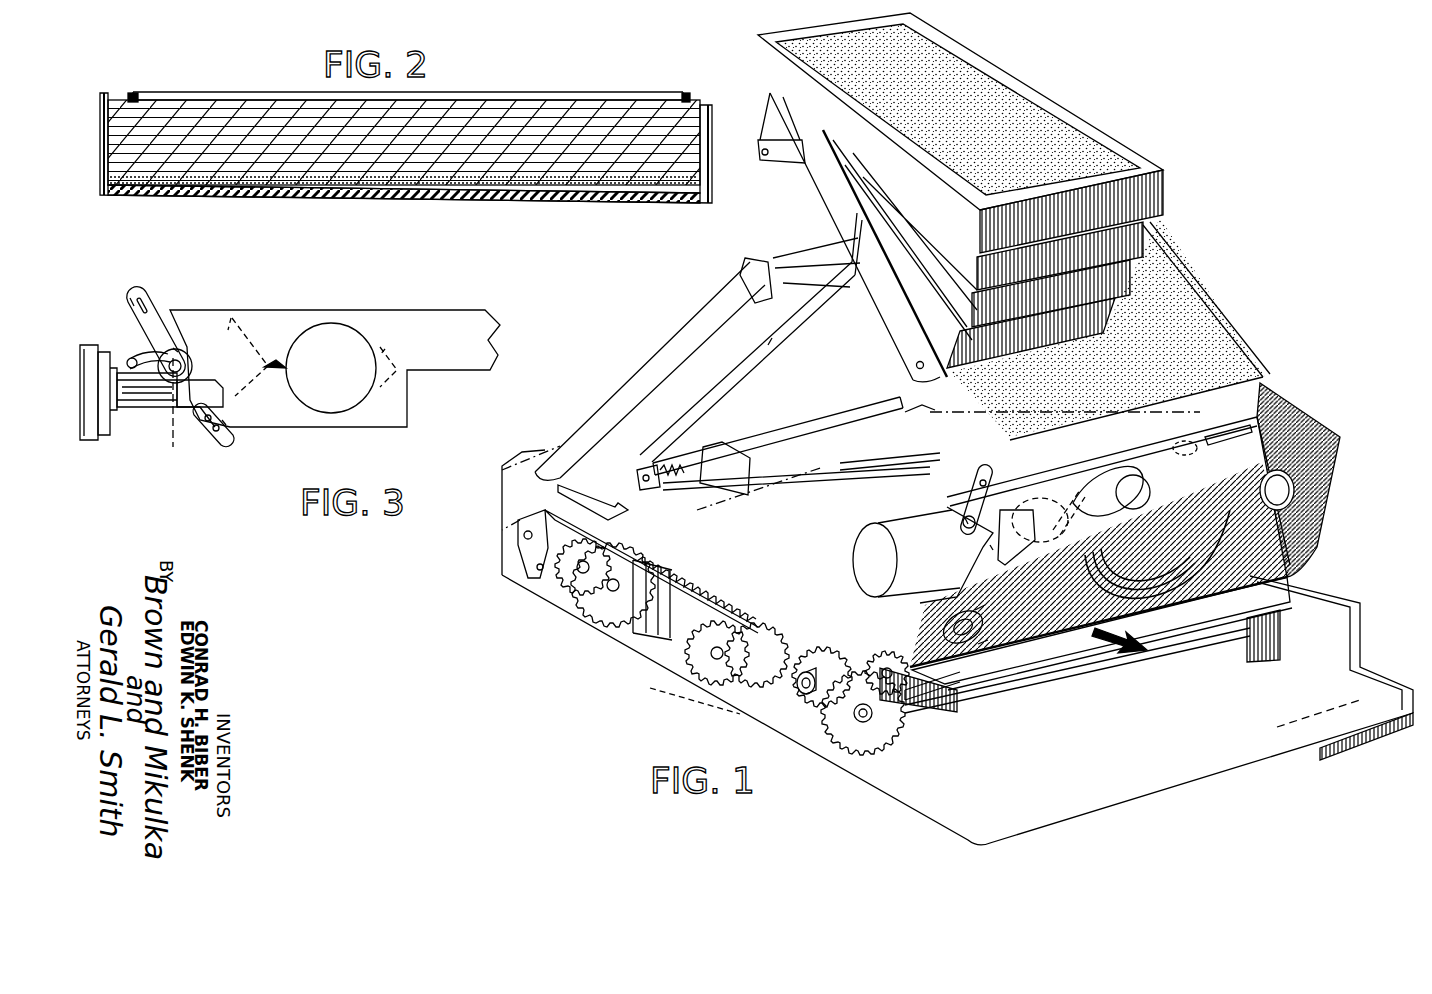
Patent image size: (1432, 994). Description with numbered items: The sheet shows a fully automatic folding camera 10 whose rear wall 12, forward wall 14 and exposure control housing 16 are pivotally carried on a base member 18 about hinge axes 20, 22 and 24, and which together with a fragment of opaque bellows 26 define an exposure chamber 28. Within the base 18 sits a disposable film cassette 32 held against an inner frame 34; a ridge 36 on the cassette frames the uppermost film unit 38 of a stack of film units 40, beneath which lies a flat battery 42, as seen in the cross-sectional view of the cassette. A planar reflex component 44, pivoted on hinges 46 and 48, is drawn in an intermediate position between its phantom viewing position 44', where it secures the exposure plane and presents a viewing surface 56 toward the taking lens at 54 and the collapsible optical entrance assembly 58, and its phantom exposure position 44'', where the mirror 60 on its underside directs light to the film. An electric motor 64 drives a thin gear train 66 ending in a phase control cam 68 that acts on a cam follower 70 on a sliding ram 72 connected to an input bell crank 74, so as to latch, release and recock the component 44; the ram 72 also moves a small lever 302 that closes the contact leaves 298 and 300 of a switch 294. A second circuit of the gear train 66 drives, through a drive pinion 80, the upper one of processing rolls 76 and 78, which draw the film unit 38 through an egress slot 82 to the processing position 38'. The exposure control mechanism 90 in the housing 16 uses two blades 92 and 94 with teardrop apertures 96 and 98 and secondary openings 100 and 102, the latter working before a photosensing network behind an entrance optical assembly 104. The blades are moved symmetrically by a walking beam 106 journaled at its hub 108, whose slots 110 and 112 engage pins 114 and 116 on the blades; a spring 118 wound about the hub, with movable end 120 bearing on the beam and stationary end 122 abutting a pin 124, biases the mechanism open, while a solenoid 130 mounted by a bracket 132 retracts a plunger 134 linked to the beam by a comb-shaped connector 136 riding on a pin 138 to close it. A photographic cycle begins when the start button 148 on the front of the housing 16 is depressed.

In FIG. 1, the fully automatic camera 10 is at (1302, 388).
In FIG. 1, the rear wall 12 is at (700, 312).
In FIG. 1, the forward wall 14 is at (1225, 332).
In FIG. 1, the exposure control housing 16 is at (1340, 446).
In FIG. 1, the base member 18 is at (1330, 575).
In FIG. 1, the hinge axis 20 is at (540, 455).
In FIG. 1, the hinge axis 22 is at (745, 258).
In FIG. 1, the hinge axis 24 is at (1265, 378).
In FIG. 1, the bellows 26 is at (655, 388).
In FIG. 1, the exposure chamber 28 is at (990, 392).
In FIG. 2, the film cassette 32 is at (712, 120).
In FIG. 1, the film cassette 32 is at (804, 694).
In FIG. 1, the inner frame 34 is at (775, 625).
In FIG. 2, the ridge 36 is at (136, 95).
In FIG. 2, the uppermost film unit 38 is at (404, 123).
In FIG. 1, the uppermost film unit 38 is at (890, 553).
In FIG. 1, the film unit processing position 38' is at (1086, 654).
In FIG. 2, the stacked film units 40 is at (540, 186).
In FIG. 2, the battery 42 is at (405, 198).
In FIG. 1, the reflex reflecting component 44 is at (801, 477).
In FIG. 1, the viewing mode position 44' is at (762, 501).
In FIG. 1, the exposure mode position 44'' is at (788, 357).
In FIG. 1, the hinge 46 is at (640, 472).
In FIG. 1, the hinge 48 is at (910, 412).
In FIG. 1, the taking lens 54 is at (1162, 565).
In FIG. 1, the viewing surface 56 is at (695, 522).
In FIG. 1, the collapsible optical entrance assembly 58 is at (1142, 128).
In FIG. 1, the mirror 60 is at (778, 262).
In FIG. 1, the electric motor 64 is at (780, 430).
In FIG. 1, the gear train 66 is at (600, 614).
In FIG. 1, the phase control cam 68 is at (747, 688).
In FIG. 1, the cam follower 70 is at (714, 688).
In FIG. 1, the ram 72 is at (578, 590).
In FIG. 1, the input bell crank 74 is at (520, 560).
In FIG. 1, the upper processing roll 76 is at (950, 702).
In FIG. 1, the lower processing roll 78 is at (900, 708).
In FIG. 1, the drive pinion 80 is at (908, 682).
In FIG. 1, the egress slot 82 is at (822, 708).
In FIG. 3, the exposure control mechanism 90 is at (365, 306).
In FIG. 1, the exposure control mechanism 90 is at (1080, 553).
In FIG. 3, the blade 92 is at (231, 318).
In FIG. 1, the blade 92 is at (1030, 540).
In FIG. 3, the blade 94 is at (268, 315).
In FIG. 1, the blade 94 is at (993, 550).
In FIG. 3, the aperture opening 96 is at (274, 358).
In FIG. 1, the aperture opening 96 is at (1133, 505).
In FIG. 3, the aperture opening 98 is at (385, 349).
In FIG. 1, the aperture opening 98 is at (1105, 491).
In FIG. 1, the secondary opening 100 is at (1255, 437).
In FIG. 1, the secondary opening 102 is at (1195, 442).
In FIG. 1, the entrance optical assembly 104 is at (1296, 495).
In FIG. 3, the walking beam 106 is at (203, 432).
In FIG. 3, the hub portion 108 is at (173, 348).
In FIG. 1, the hub portion 108 is at (1030, 512).
In FIG. 3, the elongate slot 110 is at (144, 301).
In FIG. 1, the elongate slot 110 is at (988, 472).
In FIG. 3, the elongate slot 112 is at (225, 428).
In FIG. 1, the elongate slot 112 is at (975, 590).
In FIG. 3, the pin 114 is at (130, 298).
In FIG. 3, the pin 116 is at (226, 443).
In FIG. 3, the spring 118 is at (190, 364).
In FIG. 1, the spring 118 is at (965, 518).
In FIG. 3, the movable spring end 120 is at (173, 410).
In FIG. 3, the stationary spring end 122 is at (128, 360).
In FIG. 3, the pin 124 is at (132, 358).
In FIG. 3, the solenoid 130 is at (88, 441).
In FIG. 3, the bracket 132 is at (104, 437).
In FIG. 3, the plunger 134 is at (140, 408).
In FIG. 3, the comb-shaped connector 136 is at (226, 425).
In FIG. 1, the comb-shaped connector 136 is at (1047, 521).
In FIG. 3, the pin 138 is at (226, 395).
In FIG. 1, the start button 148 is at (980, 624).
In FIG. 1, the switch 294 is at (660, 662).
In FIG. 1, the contact leaf 298 is at (646, 620).
In FIG. 1, the contact leaf 300 is at (633, 618).
In FIG. 1, the lever 302 is at (658, 648).